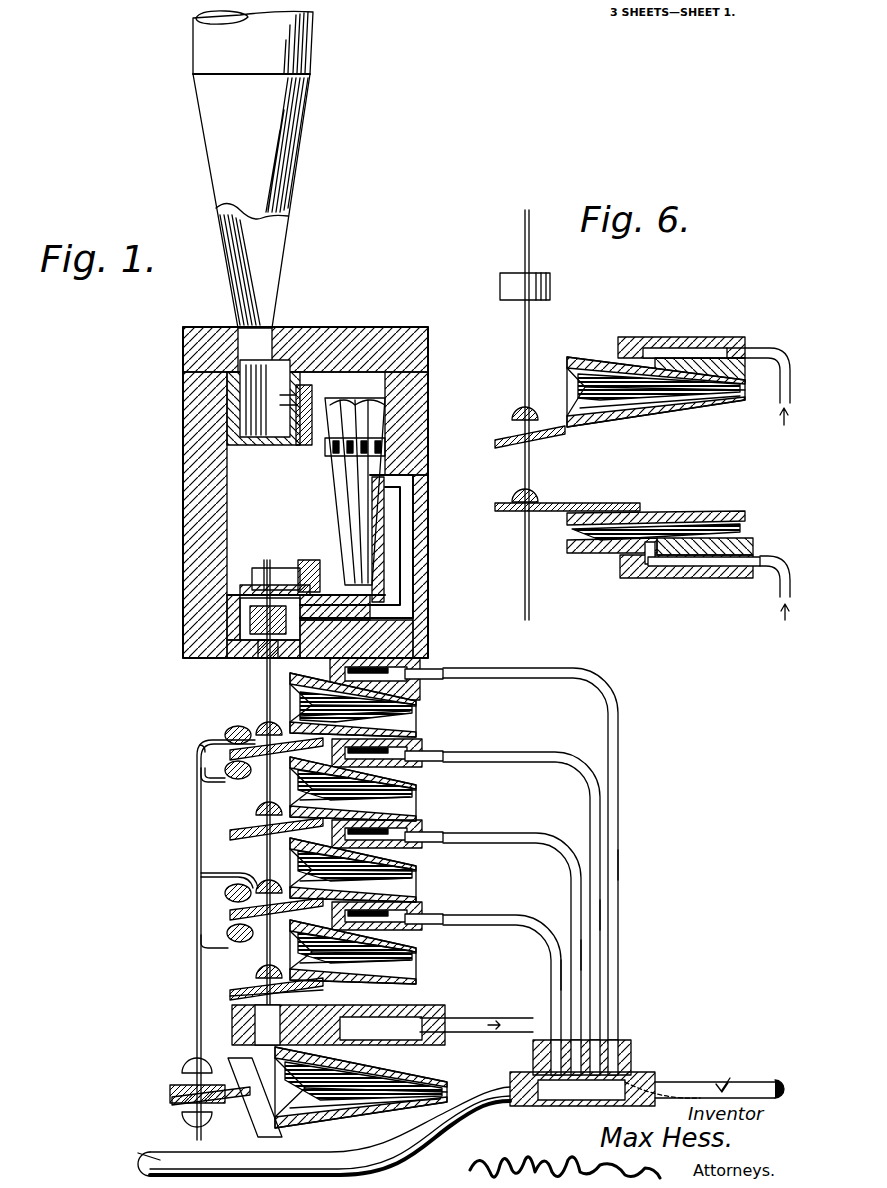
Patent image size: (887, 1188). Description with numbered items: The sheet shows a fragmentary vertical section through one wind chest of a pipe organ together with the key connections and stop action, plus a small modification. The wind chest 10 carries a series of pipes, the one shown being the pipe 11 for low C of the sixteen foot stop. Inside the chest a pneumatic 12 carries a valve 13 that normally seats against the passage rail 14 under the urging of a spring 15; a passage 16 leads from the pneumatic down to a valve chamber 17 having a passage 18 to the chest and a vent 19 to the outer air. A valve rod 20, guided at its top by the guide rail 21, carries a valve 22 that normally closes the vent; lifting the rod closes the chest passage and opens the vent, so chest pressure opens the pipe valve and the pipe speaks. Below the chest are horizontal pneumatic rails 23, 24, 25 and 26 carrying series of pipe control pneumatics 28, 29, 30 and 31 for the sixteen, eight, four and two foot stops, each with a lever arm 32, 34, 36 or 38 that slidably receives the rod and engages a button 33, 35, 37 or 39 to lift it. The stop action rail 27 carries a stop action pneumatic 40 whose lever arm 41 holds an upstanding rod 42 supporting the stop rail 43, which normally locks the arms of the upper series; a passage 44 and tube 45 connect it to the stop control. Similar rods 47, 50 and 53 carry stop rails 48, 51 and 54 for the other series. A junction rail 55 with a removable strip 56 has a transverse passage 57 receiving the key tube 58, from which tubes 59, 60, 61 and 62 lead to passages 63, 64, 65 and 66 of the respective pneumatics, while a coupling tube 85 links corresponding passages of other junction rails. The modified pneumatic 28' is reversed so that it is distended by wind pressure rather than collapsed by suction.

In FIG. 1, the wind chest 10 is at (357, 330).
In FIG. 1, the pipe 11 is at (304, 192).
In FIG. 1, the pneumatic 12 is at (335, 478).
In FIG. 1, the valve 13 is at (305, 383).
In FIG. 1, the passage rail 14 is at (230, 437).
In FIG. 1, the spring 15 is at (388, 452).
In FIG. 1, the passage 16 is at (414, 552).
In FIG. 1, the valve chamber 17 is at (248, 606).
In FIG. 1, the passage 18 is at (260, 575).
In FIG. 1, the vent 19 is at (258, 662).
In FIG. 1, the valve rod 20 is at (262, 704).
In FIG. 6, the valve rod 20 is at (532, 338).
In FIG. 1, the guide rail 21 is at (308, 560).
In FIG. 1, the valve 22 is at (258, 628).
In FIG. 6, the valve 22 is at (552, 285).
In FIG. 1, the pneumatic rail 23 is at (425, 665).
In FIG. 1, the pneumatic rail 24 is at (422, 765).
In FIG. 1, the pneumatic rail 25 is at (415, 845).
In FIG. 1, the pneumatic rail 26 is at (412, 925).
In FIG. 1, the stop action rail 27 is at (452, 1030).
In FIG. 1, the pipe control pneumatic 28 is at (511, 843).
In FIG. 6, the pipe control pneumatic 28 is at (642, 398).
In FIG. 6, the pipe control pneumatic 28' is at (642, 548).
In FIG. 1, the pipe control pneumatic 29 is at (500, 752).
In FIG. 1, the pipe control pneumatic 30 is at (488, 836).
In FIG. 1, the pipe control pneumatic 31 is at (428, 962).
In FIG. 1, the lever arm 32 is at (196, 748).
In FIG. 1, the button 33 is at (258, 730).
In FIG. 1, the lever arm 34 is at (240, 830).
In FIG. 1, the button 35 is at (255, 817).
In FIG. 1, the lever arm 36 is at (228, 932).
In FIG. 1, the button 37 is at (205, 875).
In FIG. 1, the lever arm 38 is at (236, 998).
In FIG. 1, the button 39 is at (232, 990).
In FIG. 1, the stop action pneumatic 40 is at (365, 1122).
In FIG. 1, the lever arm 41 is at (248, 1070).
In FIG. 1, the upstanding rod 42 is at (197, 1025).
In FIG. 1, the stop rail 43 is at (224, 737).
In FIG. 1, the passage 44 is at (385, 1025).
In FIG. 1, the tube 45 is at (492, 1022).
In FIG. 1, the upstanding rod 47 is at (205, 780).
In FIG. 1, the stop rail 48 is at (226, 766).
In FIG. 1, the upstanding rod 50 is at (226, 891).
In FIG. 1, the stop rail 51 is at (232, 908).
In FIG. 1, the upstanding rod 53 is at (205, 948).
In FIG. 1, the stop rail 54 is at (256, 975).
In FIG. 1, the junction rail 55 is at (525, 1100).
In FIG. 1, the strip 56 is at (575, 1050).
In FIG. 1, the transverse passage 57 is at (612, 1082).
In FIG. 1, the tube 58 is at (722, 1090).
In FIG. 1, the tube 59 is at (618, 872).
In FIG. 1, the tube 60 is at (600, 918).
In FIG. 1, the tube 61 is at (581, 955).
In FIG. 1, the tube 62 is at (560, 975).
In FIG. 1, the passage 63 is at (422, 648).
In FIG. 1, the passage 64 is at (412, 740).
In FIG. 1, the passage 65 is at (418, 822).
In FIG. 1, the passage 66 is at (420, 900).
In FIG. 1, the tube 85 is at (158, 1160).